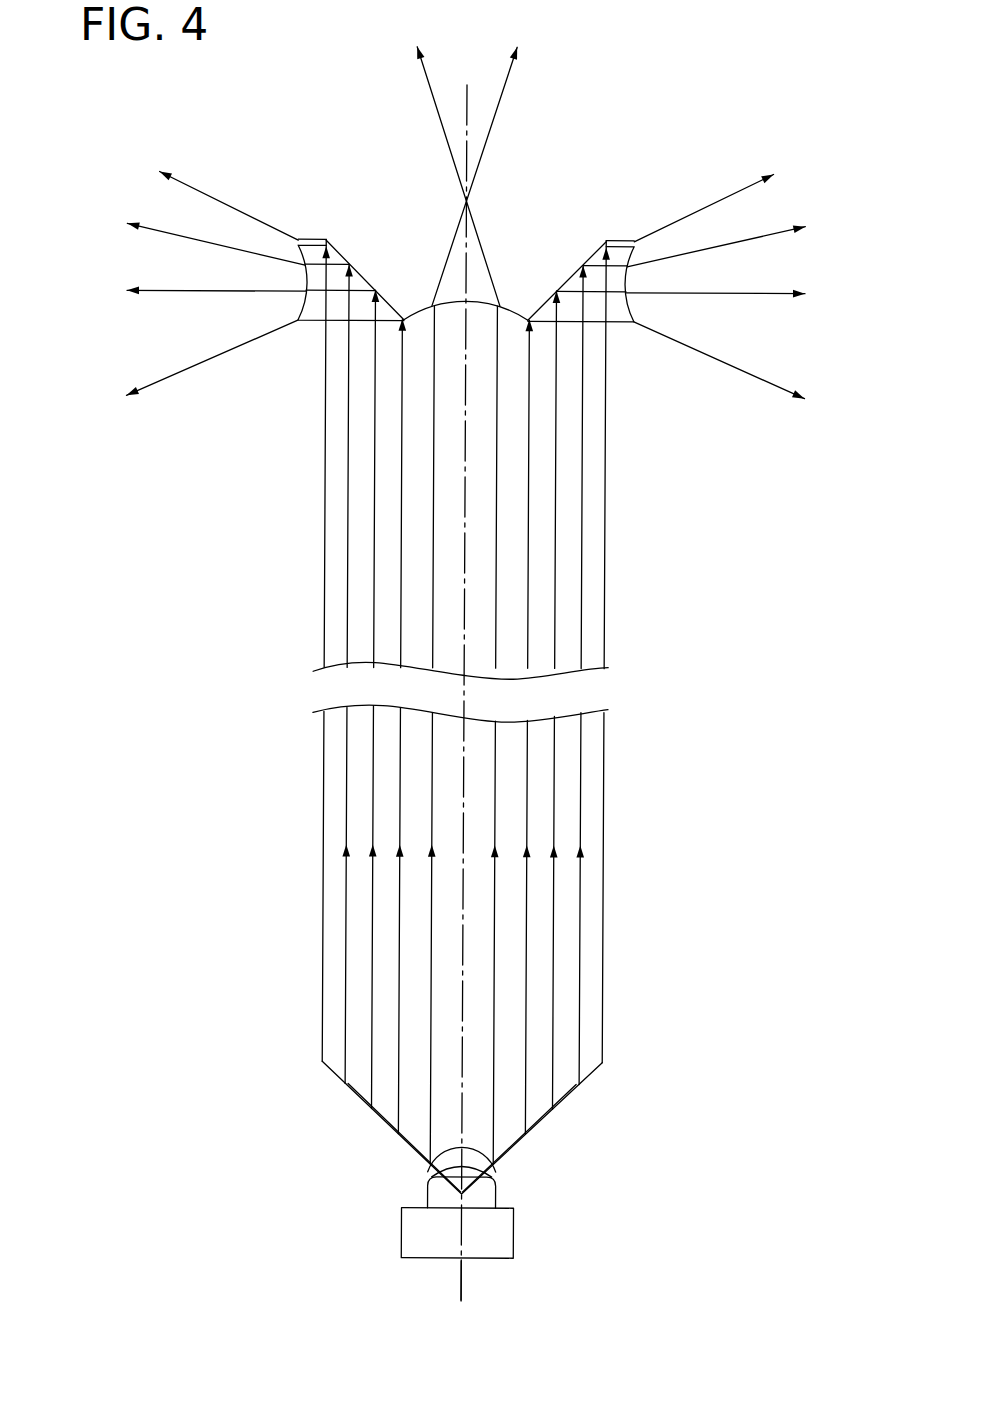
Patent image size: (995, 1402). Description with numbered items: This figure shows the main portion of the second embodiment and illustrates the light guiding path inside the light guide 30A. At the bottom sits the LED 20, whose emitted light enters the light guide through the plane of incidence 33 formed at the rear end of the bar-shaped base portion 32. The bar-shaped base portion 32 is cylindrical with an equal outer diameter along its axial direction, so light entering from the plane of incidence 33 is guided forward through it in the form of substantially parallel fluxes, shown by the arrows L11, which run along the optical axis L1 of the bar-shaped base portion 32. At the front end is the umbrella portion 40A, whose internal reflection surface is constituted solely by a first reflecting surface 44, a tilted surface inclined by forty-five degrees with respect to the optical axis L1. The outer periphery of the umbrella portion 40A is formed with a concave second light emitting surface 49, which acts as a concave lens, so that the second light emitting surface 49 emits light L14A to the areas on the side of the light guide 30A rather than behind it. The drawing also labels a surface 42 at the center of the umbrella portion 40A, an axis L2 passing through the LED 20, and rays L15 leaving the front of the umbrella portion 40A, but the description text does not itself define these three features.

The LED 20 is at (524, 1212).
The light guide 30A is at (399, 717).
The bar-shaped base portion 32 is at (321, 785).
The plane of incidence 33 is at (440, 1172).
The umbrella portion 40A is at (466, 210).
The convex emitting surface 42 is at (523, 317).
The first reflecting surface 44 is at (362, 276).
The concave second light emitting surface 49 is at (296, 246).
The optical axis L1 is at (465, 803).
The optical axis of light source L2 is at (463, 1283).
The substantially parallel fluxes L11 is at (344, 902).
The emitted light L14A is at (459, 285).
The light rays emitted from convex surface L15 is at (464, 160).